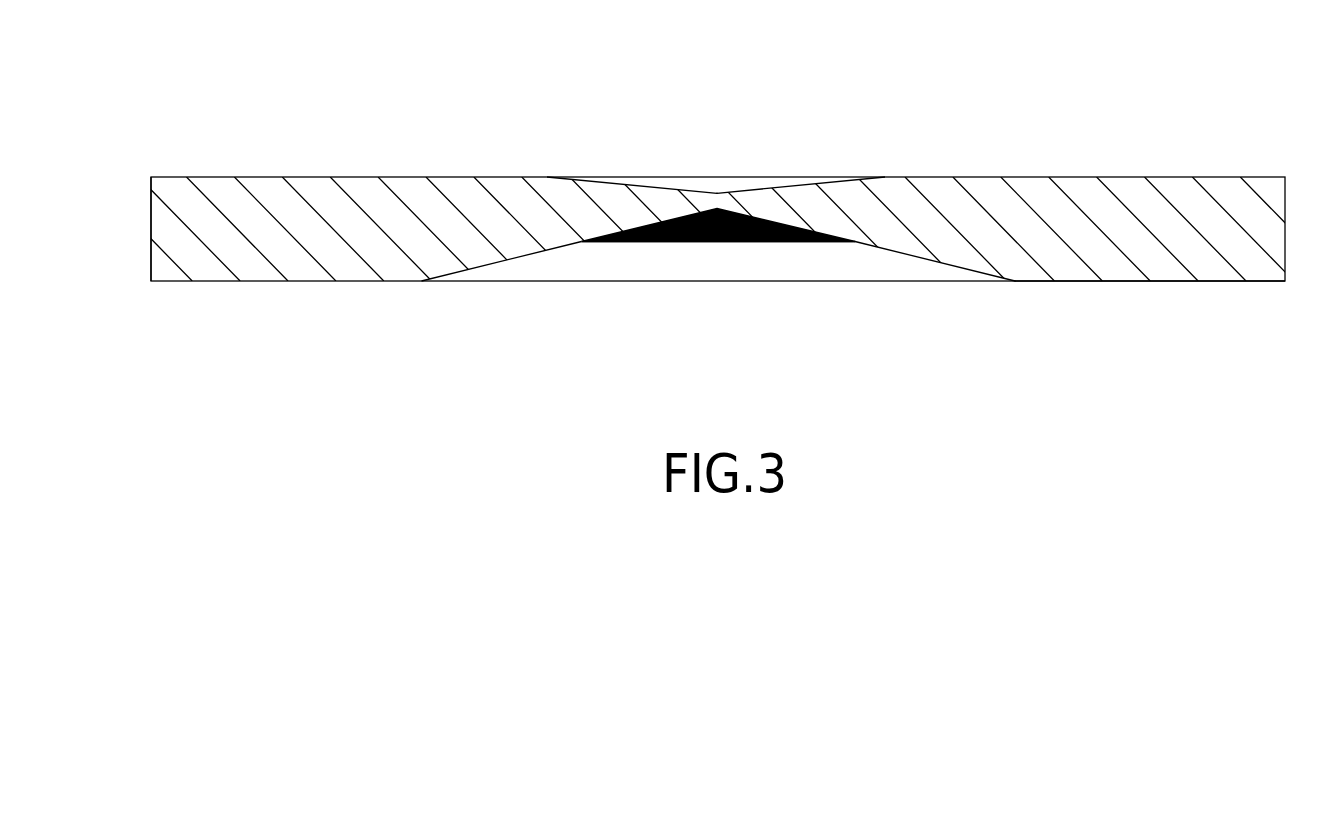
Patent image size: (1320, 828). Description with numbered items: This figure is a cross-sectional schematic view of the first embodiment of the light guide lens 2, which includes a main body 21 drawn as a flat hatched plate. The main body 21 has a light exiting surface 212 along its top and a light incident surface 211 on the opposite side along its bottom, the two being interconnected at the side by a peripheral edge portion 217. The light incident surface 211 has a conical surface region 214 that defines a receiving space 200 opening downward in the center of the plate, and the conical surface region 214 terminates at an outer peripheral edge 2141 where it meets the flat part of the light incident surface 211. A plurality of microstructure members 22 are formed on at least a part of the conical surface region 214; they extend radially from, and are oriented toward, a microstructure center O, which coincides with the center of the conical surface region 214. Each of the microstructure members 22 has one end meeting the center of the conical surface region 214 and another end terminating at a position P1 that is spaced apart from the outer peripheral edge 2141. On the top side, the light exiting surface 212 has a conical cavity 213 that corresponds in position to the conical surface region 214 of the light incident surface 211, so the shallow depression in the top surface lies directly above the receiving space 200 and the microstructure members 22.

The light guide lens 2 is at (170, 108).
The main body 21 is at (1087, 192).
The light incident surface 211 is at (1122, 282).
The light exiting surface 212 is at (530, 177).
The conical cavity 213 is at (797, 180).
The conical surface region 214 is at (923, 258).
The outer peripheral edge 2141 is at (1015, 282).
The peripheral edge portion 217 is at (150, 230).
The receiving space 200 is at (566, 278).
The microstructure members 22 is at (664, 243).
The microstructure center O is at (715, 191).
The position P1 is at (857, 244).